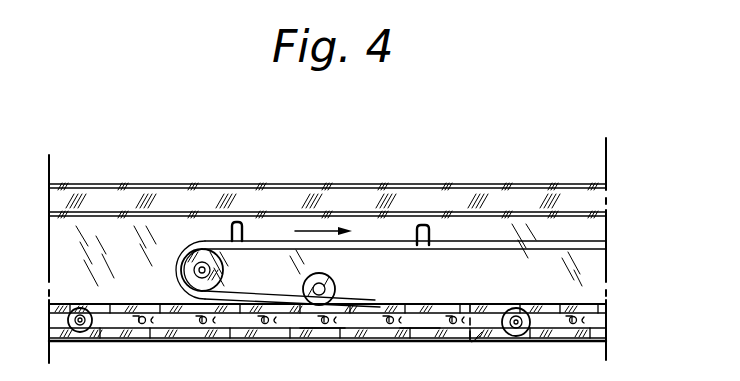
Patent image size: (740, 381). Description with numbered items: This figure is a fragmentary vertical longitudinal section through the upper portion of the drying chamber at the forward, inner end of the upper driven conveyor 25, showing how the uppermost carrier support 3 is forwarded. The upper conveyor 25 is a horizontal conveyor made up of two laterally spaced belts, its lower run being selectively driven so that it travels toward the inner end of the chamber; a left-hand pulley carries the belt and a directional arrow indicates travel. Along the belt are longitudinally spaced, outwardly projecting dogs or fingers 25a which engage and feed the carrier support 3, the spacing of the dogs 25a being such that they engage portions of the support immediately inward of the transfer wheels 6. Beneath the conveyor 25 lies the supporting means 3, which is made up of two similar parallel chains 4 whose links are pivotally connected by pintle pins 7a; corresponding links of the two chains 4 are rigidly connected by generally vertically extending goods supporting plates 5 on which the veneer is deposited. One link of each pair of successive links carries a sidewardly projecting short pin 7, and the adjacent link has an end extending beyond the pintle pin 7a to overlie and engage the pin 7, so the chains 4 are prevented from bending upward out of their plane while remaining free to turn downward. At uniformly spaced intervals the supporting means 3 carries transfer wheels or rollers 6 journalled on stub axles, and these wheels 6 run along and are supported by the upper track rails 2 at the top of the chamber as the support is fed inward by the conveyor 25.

The upper track rail 2 is at (480, 339).
The carrier support 3 is at (396, 334).
The chain 4 is at (170, 322).
The goods supporting plate 5 is at (230, 334).
The transfer wheel 6 is at (80, 330).
The short pin 7 is at (421, 335).
The pintle pin 7a is at (322, 326).
The upper conveyor 25 is at (468, 245).
The dog 25a is at (241, 222).